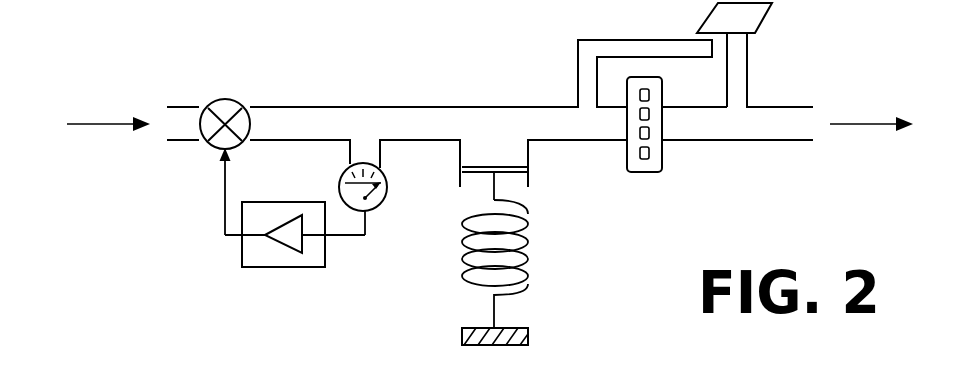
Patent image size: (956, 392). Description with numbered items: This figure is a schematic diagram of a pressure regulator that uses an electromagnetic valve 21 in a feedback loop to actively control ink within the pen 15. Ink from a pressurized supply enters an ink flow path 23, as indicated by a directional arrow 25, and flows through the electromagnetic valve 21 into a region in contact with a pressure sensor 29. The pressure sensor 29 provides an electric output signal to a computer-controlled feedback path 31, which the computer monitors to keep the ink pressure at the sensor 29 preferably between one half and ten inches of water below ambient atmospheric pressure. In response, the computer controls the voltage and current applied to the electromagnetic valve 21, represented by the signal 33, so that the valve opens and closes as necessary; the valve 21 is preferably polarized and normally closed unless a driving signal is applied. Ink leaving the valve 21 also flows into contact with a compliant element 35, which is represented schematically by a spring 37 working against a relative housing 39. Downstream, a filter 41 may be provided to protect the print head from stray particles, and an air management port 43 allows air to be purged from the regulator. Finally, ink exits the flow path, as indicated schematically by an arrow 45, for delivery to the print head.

The pen 15 is at (447, 89).
The electromagnetic valve 21 is at (222, 97).
The ink flow path 23 is at (180, 105).
The directional arrow 25 is at (102, 121).
The pressure sensor 29 is at (387, 193).
The feedback path 31 is at (325, 267).
The signal 33 is at (223, 167).
The compliant element 35 is at (528, 173).
The spring 37 is at (528, 252).
The relative housing 39 is at (528, 340).
The filter 41 is at (662, 152).
The air management port 43 is at (772, 8).
The arrow 45 is at (847, 123).